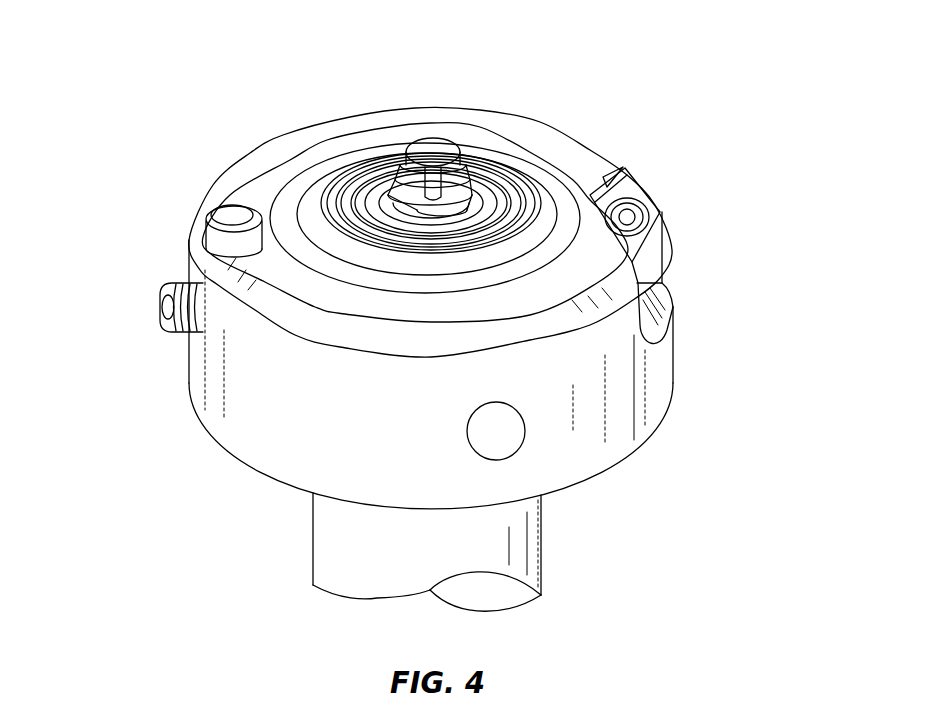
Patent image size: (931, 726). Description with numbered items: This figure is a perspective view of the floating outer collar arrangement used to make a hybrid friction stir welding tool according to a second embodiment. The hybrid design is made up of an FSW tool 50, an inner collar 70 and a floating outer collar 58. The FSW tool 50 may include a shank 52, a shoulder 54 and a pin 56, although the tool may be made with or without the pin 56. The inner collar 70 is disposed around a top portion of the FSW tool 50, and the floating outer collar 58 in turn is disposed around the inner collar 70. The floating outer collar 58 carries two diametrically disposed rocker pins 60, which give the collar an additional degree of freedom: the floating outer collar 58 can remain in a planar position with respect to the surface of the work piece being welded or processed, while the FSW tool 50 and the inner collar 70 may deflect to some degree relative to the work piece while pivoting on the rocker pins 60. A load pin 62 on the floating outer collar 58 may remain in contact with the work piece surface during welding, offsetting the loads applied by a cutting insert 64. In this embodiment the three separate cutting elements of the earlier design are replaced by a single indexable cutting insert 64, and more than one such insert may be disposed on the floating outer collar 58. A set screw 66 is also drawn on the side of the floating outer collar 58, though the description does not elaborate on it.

The FSW tool 50 is at (712, 263).
The shank 52 is at (520, 548).
The shoulder 54 is at (502, 183).
The pin 56 is at (430, 150).
The floating outer collar 58 is at (643, 388).
The rocker pins 60 is at (500, 434).
The load pin 62 is at (232, 214).
The indexable cutting insert 64 is at (630, 190).
The set screw 66 is at (175, 298).
The inner collar 70 is at (552, 203).